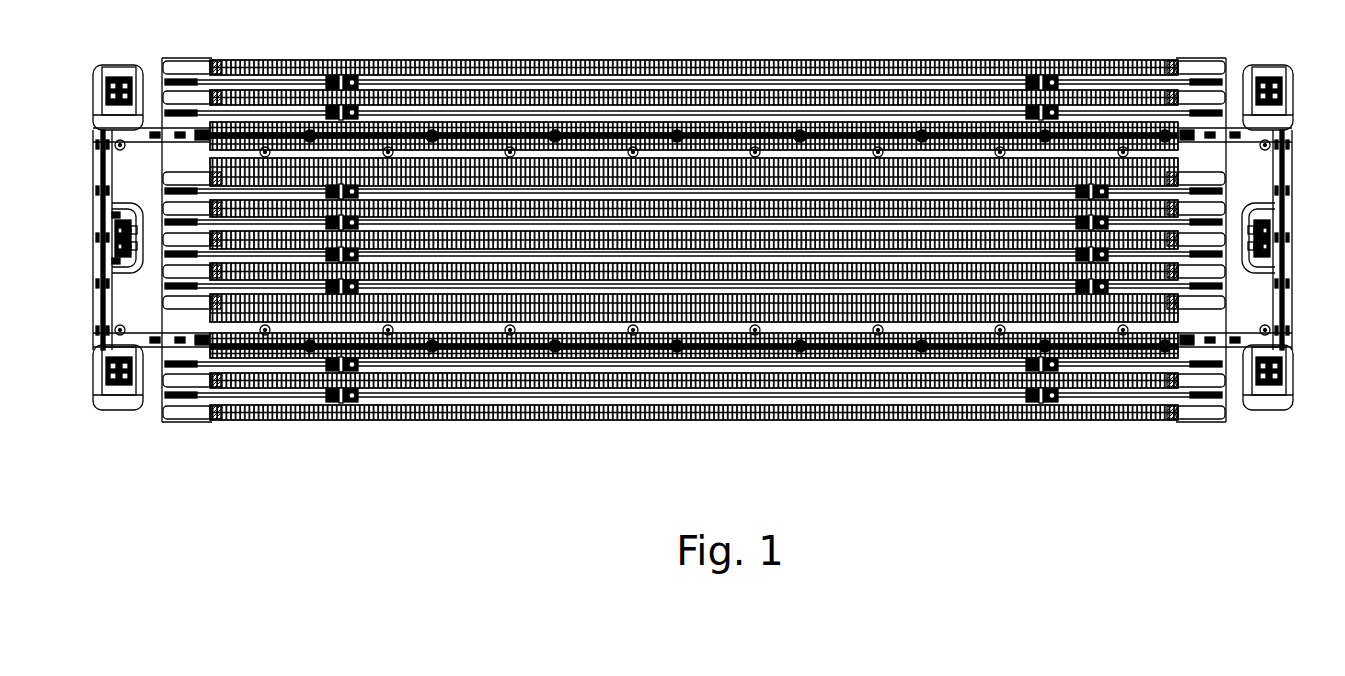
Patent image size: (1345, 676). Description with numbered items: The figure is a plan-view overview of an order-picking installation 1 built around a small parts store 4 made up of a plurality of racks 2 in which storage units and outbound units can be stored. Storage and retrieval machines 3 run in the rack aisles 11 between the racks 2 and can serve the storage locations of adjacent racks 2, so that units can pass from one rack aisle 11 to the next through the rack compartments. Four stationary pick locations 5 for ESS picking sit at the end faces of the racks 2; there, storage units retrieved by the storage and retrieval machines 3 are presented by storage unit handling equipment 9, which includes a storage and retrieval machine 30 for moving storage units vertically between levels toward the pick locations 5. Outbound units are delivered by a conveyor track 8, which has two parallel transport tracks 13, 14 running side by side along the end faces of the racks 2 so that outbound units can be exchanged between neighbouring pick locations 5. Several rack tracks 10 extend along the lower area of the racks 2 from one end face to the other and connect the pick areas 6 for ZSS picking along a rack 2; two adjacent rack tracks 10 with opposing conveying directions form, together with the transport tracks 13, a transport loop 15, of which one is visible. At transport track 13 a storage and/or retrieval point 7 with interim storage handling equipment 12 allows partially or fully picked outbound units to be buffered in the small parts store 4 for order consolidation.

The installation 1 is at (905, 445).
The rack 2 is at (543, 421).
The storage and retrieval machine 3 is at (1028, 374).
The small parts store 4 is at (870, 421).
The pick location 5 is at (98, 143).
The pick area 6 is at (505, 147).
The storage and/or retrieval point 7 is at (112, 211).
The conveyor track 8 is at (1288, 315).
The storage unit handling equipment 9 is at (1293, 96).
The rack track 10 is at (823, 123).
The rack aisle 11 is at (207, 323).
The interim storage handling equipment 12 is at (1256, 208).
The transport track 13 is at (95, 229).
The transport track 14 is at (92, 260).
The transport loop 15 is at (630, 147).
The storage and retrieval machine 30 is at (130, 212).